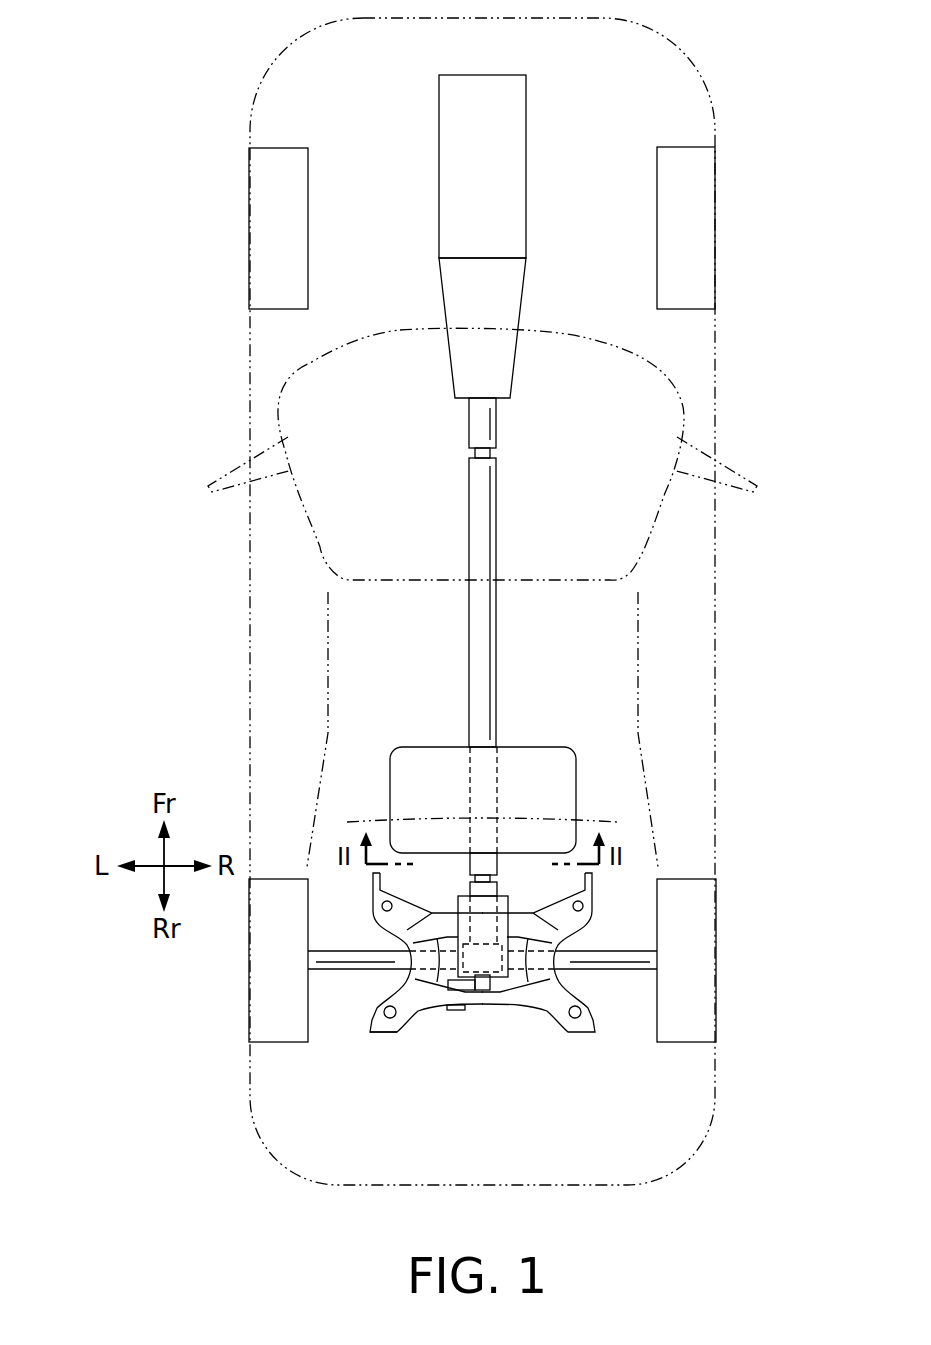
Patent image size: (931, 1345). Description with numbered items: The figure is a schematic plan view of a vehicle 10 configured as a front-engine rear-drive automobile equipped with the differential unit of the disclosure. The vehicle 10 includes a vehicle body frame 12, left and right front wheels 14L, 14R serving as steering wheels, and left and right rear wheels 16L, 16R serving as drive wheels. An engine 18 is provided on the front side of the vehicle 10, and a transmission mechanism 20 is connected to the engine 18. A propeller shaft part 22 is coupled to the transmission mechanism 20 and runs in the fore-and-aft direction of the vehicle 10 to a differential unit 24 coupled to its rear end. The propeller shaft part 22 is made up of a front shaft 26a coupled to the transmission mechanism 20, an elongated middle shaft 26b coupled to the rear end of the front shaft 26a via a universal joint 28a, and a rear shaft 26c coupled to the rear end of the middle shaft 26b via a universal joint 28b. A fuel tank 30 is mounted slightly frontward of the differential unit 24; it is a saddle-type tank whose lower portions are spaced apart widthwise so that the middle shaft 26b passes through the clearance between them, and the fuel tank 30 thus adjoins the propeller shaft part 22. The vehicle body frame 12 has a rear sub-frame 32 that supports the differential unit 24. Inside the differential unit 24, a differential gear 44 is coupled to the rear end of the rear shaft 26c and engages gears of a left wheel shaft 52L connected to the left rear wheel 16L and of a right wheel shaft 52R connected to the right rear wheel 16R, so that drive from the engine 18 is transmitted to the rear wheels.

The vehicle 10 is at (270, 37).
The vehicle body frame 12 is at (376, 1046).
The left front wheel 14L is at (249, 184).
The right front wheel 14R is at (715, 197).
The left rear wheel 16L is at (249, 967).
The right rear wheel 16R is at (716, 972).
The engine 18 is at (518, 124).
The transmission mechanism 20 is at (513, 298).
The propeller shaft part 22 is at (499, 512).
The differential unit 24 is at (504, 986).
The front shaft 26a is at (491, 420).
The middle shaft 26b is at (491, 641).
The rear shaft 26c is at (508, 882).
The universal joint 28a is at (475, 455).
The universal joint 28b is at (474, 878).
The fuel tank 30 is at (426, 755).
The rear sub-frame 32 is at (402, 1033).
The differential gear 44 is at (450, 990).
The left wheel shaft 52L is at (336, 950).
The right wheel shaft 52R is at (620, 950).